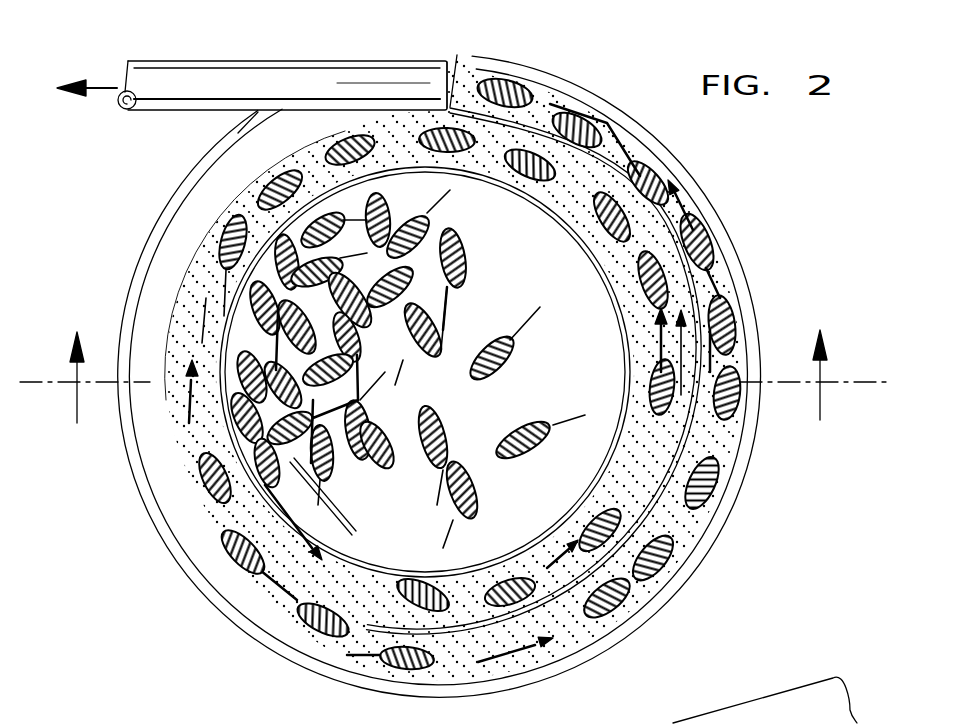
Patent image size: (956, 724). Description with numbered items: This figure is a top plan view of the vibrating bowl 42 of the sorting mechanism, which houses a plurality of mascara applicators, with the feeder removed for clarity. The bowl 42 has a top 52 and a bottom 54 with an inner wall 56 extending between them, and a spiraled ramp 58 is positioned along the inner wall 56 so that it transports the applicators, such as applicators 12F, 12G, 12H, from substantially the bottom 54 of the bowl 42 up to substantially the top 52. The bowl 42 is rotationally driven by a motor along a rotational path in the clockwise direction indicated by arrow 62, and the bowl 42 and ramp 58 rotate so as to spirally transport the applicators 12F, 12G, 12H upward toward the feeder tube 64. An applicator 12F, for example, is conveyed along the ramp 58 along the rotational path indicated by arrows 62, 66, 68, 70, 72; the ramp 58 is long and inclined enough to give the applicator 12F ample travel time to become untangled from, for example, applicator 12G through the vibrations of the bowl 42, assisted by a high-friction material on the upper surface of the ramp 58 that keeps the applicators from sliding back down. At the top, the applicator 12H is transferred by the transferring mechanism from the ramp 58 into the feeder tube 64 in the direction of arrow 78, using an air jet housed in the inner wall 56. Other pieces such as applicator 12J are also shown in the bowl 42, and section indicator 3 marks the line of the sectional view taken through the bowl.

The section line 3- 3 is at (453, 358).
The mascara applicator 12F is at (663, 557).
The mascara applicator 12G is at (593, 610).
The mascara applicator 12H is at (530, 94).
The food piece 12J is at (466, 244).
The vibrating bowl 42 is at (728, 507).
The top 52 is at (530, 72).
The bottom 54 is at (535, 518).
The inner wall 56 is at (720, 268).
The spiraled ramp 58 is at (213, 520).
The arrow 62 is at (320, 527).
The feeder tube 64 is at (281, 63).
The arrow 66 is at (660, 342).
The arrow 68 is at (192, 372).
The arrow 70 is at (512, 658).
The arrow 72 is at (673, 187).
The arrow 78 is at (100, 85).